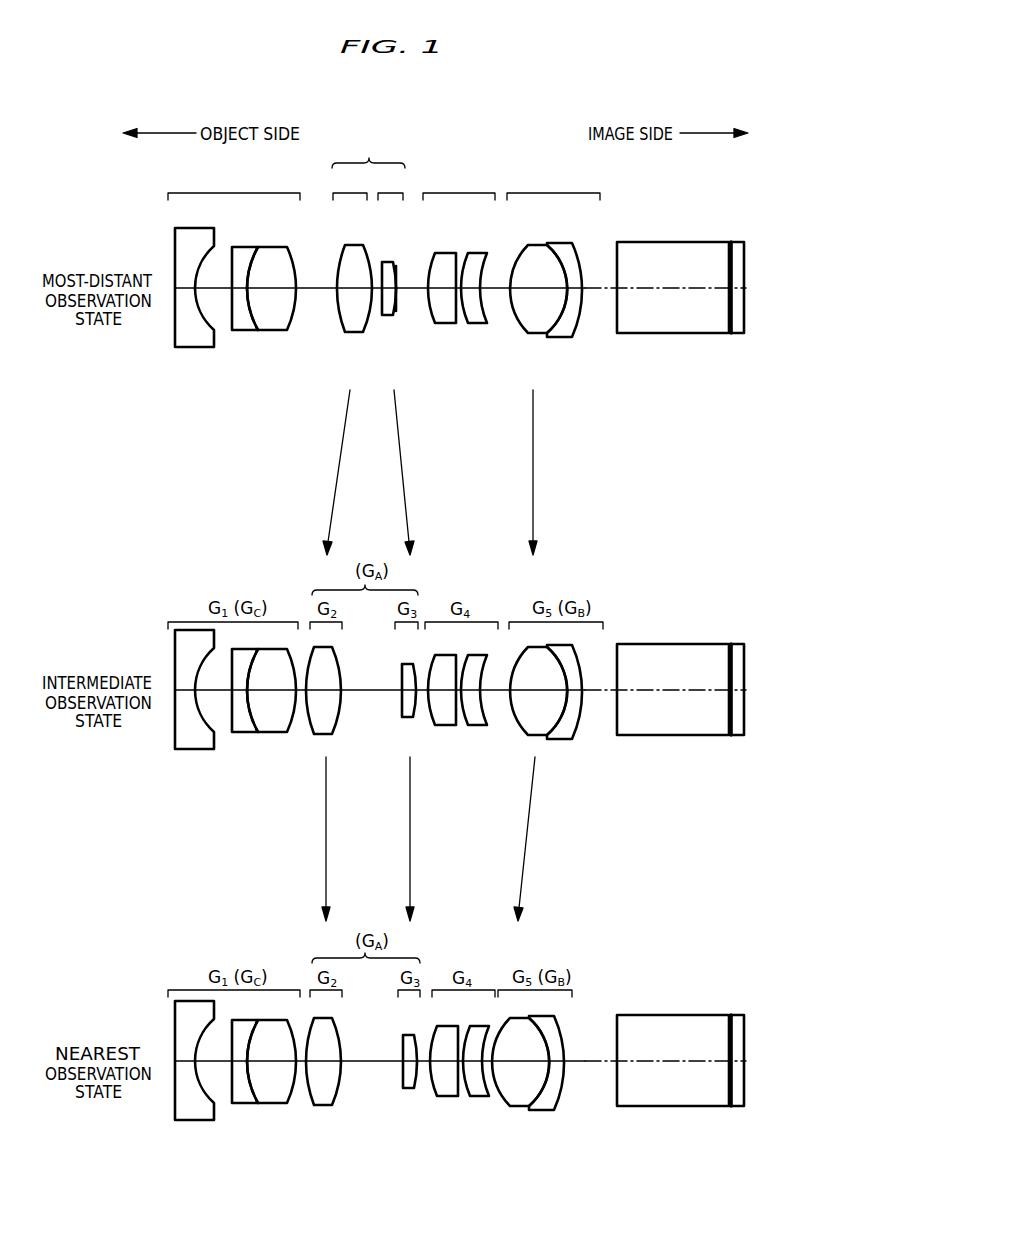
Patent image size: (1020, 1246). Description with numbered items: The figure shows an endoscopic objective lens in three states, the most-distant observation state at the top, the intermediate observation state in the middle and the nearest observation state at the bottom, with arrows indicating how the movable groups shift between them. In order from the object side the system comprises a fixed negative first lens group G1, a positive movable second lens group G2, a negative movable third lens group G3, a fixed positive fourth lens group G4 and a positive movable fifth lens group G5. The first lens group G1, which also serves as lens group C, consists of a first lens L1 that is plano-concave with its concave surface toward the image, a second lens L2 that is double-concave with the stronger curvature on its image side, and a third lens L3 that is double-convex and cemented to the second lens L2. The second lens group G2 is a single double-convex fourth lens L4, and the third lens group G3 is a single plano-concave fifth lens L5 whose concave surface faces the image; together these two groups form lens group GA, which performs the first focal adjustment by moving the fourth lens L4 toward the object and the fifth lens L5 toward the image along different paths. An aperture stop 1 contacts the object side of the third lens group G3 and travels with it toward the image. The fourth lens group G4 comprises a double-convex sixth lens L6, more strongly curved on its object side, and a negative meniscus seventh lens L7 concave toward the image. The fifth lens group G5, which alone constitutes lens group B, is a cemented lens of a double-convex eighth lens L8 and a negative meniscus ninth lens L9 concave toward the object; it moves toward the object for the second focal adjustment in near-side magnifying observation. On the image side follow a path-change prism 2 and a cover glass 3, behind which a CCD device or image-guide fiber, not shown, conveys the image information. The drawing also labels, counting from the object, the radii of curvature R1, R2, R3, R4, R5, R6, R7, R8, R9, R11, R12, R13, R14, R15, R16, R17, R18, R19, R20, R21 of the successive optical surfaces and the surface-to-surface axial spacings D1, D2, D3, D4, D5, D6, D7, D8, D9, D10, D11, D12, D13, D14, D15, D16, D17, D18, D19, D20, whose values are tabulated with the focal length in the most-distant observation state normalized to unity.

The aperture stop 1 is at (397, 318).
The path-change prism 2 is at (655, 334).
The cover glass 3 is at (738, 334).
The first lens L1 is at (200, 348).
The second lens L2 is at (246, 331).
The third lens L3 is at (280, 331).
The fourth lens L4 is at (352, 333).
The fifth lens L5 is at (389, 316).
The sixth lens L6 is at (450, 324).
The seventh lens L7 is at (484, 324).
The eighth lens L8 is at (534, 334).
The ninth lens L9 is at (570, 338).
The first lens group G1 is at (234, 185).
The second lens group G2 is at (350, 186).
The third lens group G3 is at (390, 186).
The fourth lens group G4 is at (459, 186).
The fifth lens group G5 is at (553, 185).
The lens group A GA is at (372, 145).
The radius of curvature of first surface R1 is at (176, 238).
The radius of curvature of second surface R2 is at (212, 247).
The radius of curvature of third surface R3 is at (233, 255).
The radius of curvature of fourth surface R4 is at (257, 250).
The radius of curvature of fifth surface R5 is at (291, 250).
The radius of curvature of sixth surface R6 is at (346, 252).
The radius of curvature of seventh surface R7 is at (363, 250).
The radius of curvature of eighth surface R8 is at (383, 265).
The radius of curvature of ninth surface R9 is at (395, 265).
The radius of curvature of eleventh surface R11 is at (432, 258).
The radius of curvature of twelfth surface R12 is at (454, 258).
The radius of curvature of thirteenth surface R13 is at (468, 258).
The radius of curvature of fourteenth surface R14 is at (486, 258).
The radius of curvature of fifteenth surface R15 is at (526, 248).
The radius of curvature of sixteenth surface R16 is at (547, 250).
The radius of curvature of seventeenth surface R17 is at (573, 248).
The radius of curvature of eighteenth surface R18 is at (603, 251).
The radius of curvature of nineteenth surface R19 is at (729, 246).
The radius of curvature of twentieth surface R20 is at (731, 244).
The radius of curvature of twenty-first surface R21 is at (744, 244).
The first surface-to-surface axial spacing D1 is at (185, 275).
The second surface-to-surface axial spacing D2 is at (218, 292).
The third surface-to-surface axial spacing D3 is at (226, 288).
The fourth surface-to-surface axial spacing D4 is at (272, 291).
The fifth surface-to-surface axial spacing D5 is at (313, 286).
The sixth surface-to-surface axial spacing D6 is at (336, 290).
The seventh surface-to-surface axial spacing D7 is at (363, 288).
The eighth surface-to-surface axial spacing D8 is at (378, 292).
The ninth surface-to-surface axial spacing D9 is at (404, 288).
The tenth surface-to-surface axial spacing D10 is at (410, 290).
The eleventh surface-to-surface axial spacing D11 is at (423, 283).
The twelfth surface-to-surface axial spacing D12 is at (461, 292).
The thirteenth surface-to-surface axial spacing D13 is at (494, 286).
The fourteenth surface-to-surface axial spacing D14 is at (496, 292).
The fifteenth surface-to-surface axial spacing D15 is at (546, 288).
The sixteenth surface-to-surface axial spacing D16 is at (586, 292).
The seventeenth surface-to-surface axial spacing D17 is at (598, 287).
The eighteenth surface-to-surface axial spacing D18 is at (660, 286).
The nineteenth surface-to-surface axial spacing D19 is at (720, 286).
The twentieth surface-to-surface axial spacing D20 is at (750, 292).